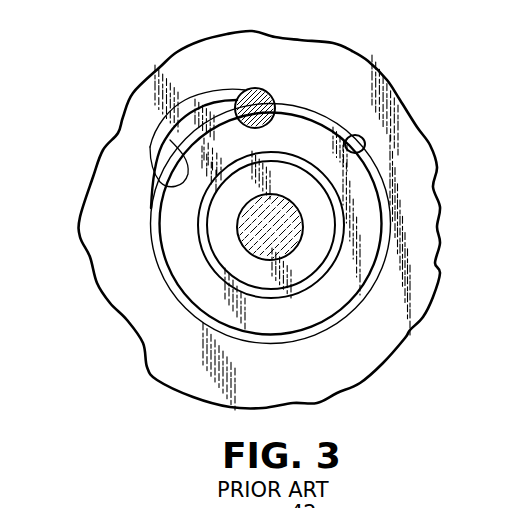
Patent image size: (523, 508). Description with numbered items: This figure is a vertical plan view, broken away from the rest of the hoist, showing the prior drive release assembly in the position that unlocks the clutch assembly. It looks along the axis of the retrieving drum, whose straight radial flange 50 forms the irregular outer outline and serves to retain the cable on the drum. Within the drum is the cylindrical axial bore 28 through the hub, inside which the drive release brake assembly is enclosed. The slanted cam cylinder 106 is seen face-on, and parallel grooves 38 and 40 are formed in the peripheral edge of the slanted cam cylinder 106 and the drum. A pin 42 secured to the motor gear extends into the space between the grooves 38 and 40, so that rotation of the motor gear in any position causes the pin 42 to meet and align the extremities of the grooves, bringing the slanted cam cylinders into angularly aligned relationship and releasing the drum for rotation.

The cylindrical axial bore 28 is at (362, 148).
The parallel groove 38 is at (168, 205).
The parallel groove 40 is at (150, 147).
The pin 42 is at (253, 88).
The straight radial flange 50 is at (105, 258).
The slanted cam cylinder 106 is at (323, 312).